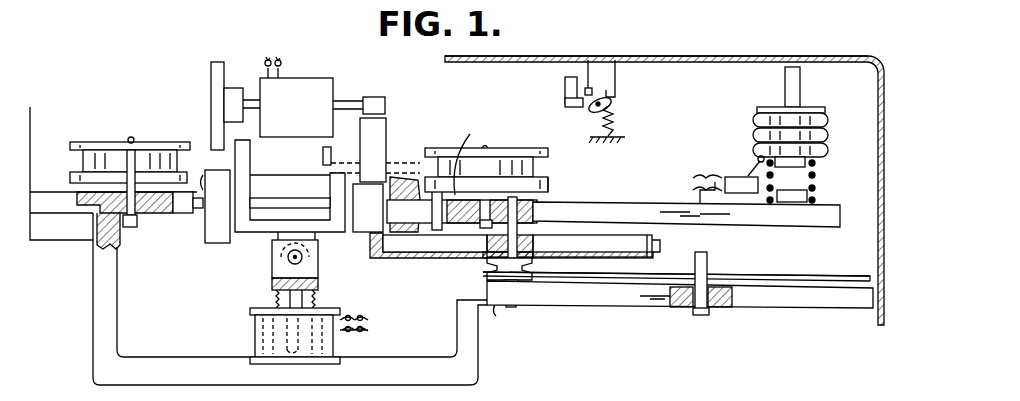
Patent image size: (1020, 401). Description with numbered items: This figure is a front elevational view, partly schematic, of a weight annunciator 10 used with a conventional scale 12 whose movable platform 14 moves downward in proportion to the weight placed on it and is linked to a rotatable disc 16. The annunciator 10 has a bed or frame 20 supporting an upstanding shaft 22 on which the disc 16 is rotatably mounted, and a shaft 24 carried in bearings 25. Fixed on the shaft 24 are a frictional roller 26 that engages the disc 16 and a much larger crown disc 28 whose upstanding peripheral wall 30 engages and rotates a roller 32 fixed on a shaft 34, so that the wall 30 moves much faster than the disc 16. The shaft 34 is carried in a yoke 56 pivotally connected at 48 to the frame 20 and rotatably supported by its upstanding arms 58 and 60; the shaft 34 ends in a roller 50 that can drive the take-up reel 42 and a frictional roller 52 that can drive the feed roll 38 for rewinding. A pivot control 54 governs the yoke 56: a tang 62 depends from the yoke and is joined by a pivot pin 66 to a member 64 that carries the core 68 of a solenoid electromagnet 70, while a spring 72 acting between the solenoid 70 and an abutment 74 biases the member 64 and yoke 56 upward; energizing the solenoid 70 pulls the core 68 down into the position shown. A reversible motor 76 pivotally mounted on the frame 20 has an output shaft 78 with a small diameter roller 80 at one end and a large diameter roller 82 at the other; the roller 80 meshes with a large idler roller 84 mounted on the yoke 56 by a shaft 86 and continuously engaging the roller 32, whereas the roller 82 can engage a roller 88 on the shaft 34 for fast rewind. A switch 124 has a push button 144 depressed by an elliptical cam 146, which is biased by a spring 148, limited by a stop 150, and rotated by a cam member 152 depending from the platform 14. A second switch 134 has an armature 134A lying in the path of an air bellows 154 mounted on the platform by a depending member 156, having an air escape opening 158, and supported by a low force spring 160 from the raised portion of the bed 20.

The weight annunciator 10 is at (347, 62).
The scale 12 is at (873, 58).
The movable platform 14 is at (578, 56).
The rotatable disc 16 is at (832, 278).
The bed or frame 20 is at (604, 203).
The upstanding shaft 22 is at (707, 268).
The shaft 24 is at (525, 298).
The bearings 25 is at (500, 317).
The frictional roller 26 is at (487, 268).
The crown disc 28 is at (647, 270).
The upstanding peripheral wall 30 is at (652, 243).
The roller 32 is at (370, 238).
The shaft 34 is at (310, 198).
The feed roll 38 is at (105, 142).
The take-up roll or reel 42 is at (548, 186).
The pivotal connection 48 is at (435, 150).
The roller 50 is at (470, 155).
The frictional roller 52 is at (194, 170).
The pivot control 54 is at (286, 182).
The yoke 56 is at (228, 243).
The arm 58 is at (245, 182).
The arm 60 is at (328, 170).
The tang 62 is at (293, 255).
The member 64 is at (272, 273).
The pivot pin 66 is at (302, 256).
The core 68 is at (258, 322).
The solenoid electromagnet 70 is at (340, 338).
The spring 72 is at (315, 297).
The abutment 74 is at (272, 286).
The reversible motor 76 is at (300, 80).
The output shaft 78 is at (340, 101).
The small diameter roller 80 is at (386, 100).
The large diameter roller 82 is at (211, 78).
The idler roller 84 is at (375, 175).
The shaft 86 is at (362, 143).
The roller 88 is at (204, 187).
The switch 124 is at (565, 85).
The switch 134 is at (728, 176).
The armature 134A is at (752, 162).
The push button 144 is at (565, 103).
The elliptical cam 146 is at (590, 110).
The spring 148 is at (612, 125).
The stop 150 is at (590, 87).
The cam member 152 is at (616, 80).
The air bellows 154 is at (828, 120).
The depending member 156 is at (802, 85).
The air escape opening 158 is at (770, 106).
The spring 160 is at (815, 175).